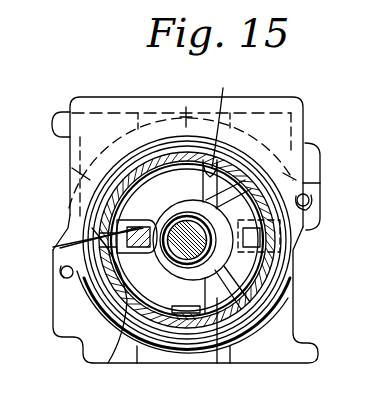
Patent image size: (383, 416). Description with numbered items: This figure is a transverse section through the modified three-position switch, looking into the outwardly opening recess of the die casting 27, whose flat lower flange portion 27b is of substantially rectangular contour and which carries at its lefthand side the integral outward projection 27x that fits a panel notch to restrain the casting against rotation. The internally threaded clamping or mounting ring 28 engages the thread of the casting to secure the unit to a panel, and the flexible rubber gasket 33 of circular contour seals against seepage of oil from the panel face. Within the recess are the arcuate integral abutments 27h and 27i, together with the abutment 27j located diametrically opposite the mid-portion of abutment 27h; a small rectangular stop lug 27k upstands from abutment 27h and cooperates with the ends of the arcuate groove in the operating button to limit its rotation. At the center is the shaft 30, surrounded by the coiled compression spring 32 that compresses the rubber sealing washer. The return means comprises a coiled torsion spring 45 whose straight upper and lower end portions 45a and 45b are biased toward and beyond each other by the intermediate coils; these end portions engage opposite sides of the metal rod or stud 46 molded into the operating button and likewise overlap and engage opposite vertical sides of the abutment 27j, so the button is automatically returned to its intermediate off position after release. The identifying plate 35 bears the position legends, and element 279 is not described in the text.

The identifying plate 35 is at (103, 105).
The lever arm 279 is at (216, 124).
The shaft 30 is at (200, 228).
The coiled compression spring 32 is at (184, 205).
The lower end portion of torsion spring 45b is at (133, 221).
The outward projection 27x is at (72, 218).
The abutment 27j is at (53, 247).
The metal rod or stud 46 is at (100, 257).
The upper end portion of torsion spring 45a is at (143, 256).
The coiled torsion spring 45 is at (191, 281).
The stop lug 27k is at (257, 242).
The abutment 27h is at (250, 258).
The flexible rubber gasket 33 is at (90, 298).
The clamping or mounting ring 28 is at (278, 308).
The die casting 27 is at (108, 363).
The abutment 27i is at (215, 363).
The flange portion 27b is at (279, 356).